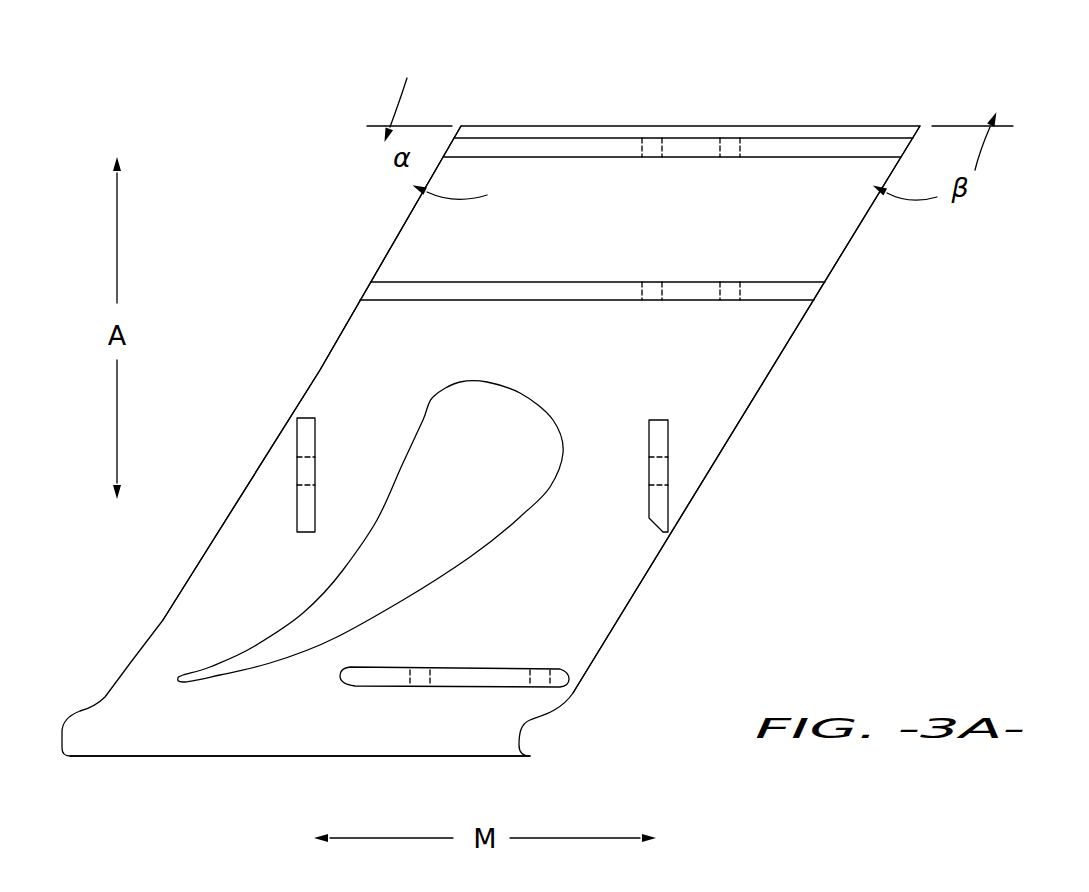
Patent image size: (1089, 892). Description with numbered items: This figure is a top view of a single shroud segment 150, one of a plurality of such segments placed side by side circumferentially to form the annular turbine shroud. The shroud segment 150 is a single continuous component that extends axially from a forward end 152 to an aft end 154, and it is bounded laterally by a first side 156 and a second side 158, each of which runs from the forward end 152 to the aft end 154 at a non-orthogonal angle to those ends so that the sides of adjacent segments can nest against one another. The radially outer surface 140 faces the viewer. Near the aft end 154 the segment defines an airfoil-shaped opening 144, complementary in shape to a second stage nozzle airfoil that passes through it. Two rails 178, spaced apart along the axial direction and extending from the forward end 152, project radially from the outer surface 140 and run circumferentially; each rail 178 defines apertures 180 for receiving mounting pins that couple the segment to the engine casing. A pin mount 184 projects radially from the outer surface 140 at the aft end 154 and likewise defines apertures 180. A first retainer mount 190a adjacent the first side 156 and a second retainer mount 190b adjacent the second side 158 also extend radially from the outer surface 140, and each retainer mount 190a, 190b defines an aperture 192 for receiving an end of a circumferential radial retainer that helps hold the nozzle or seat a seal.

The shroud segment 150 is at (291, 121).
The forward end 152 is at (820, 125).
The aft end 154 is at (317, 758).
The first side 156 is at (343, 332).
The second side 158 is at (742, 430).
The radially outer surface 140 is at (830, 215).
The opening 144 is at (510, 488).
The rail 178 is at (533, 148).
The aperture 180 is at (653, 140).
The pin mount 184 is at (503, 680).
The first retainer mount 190a is at (307, 427).
The second retainer mount 190b is at (658, 427).
The aperture 192 is at (307, 470).